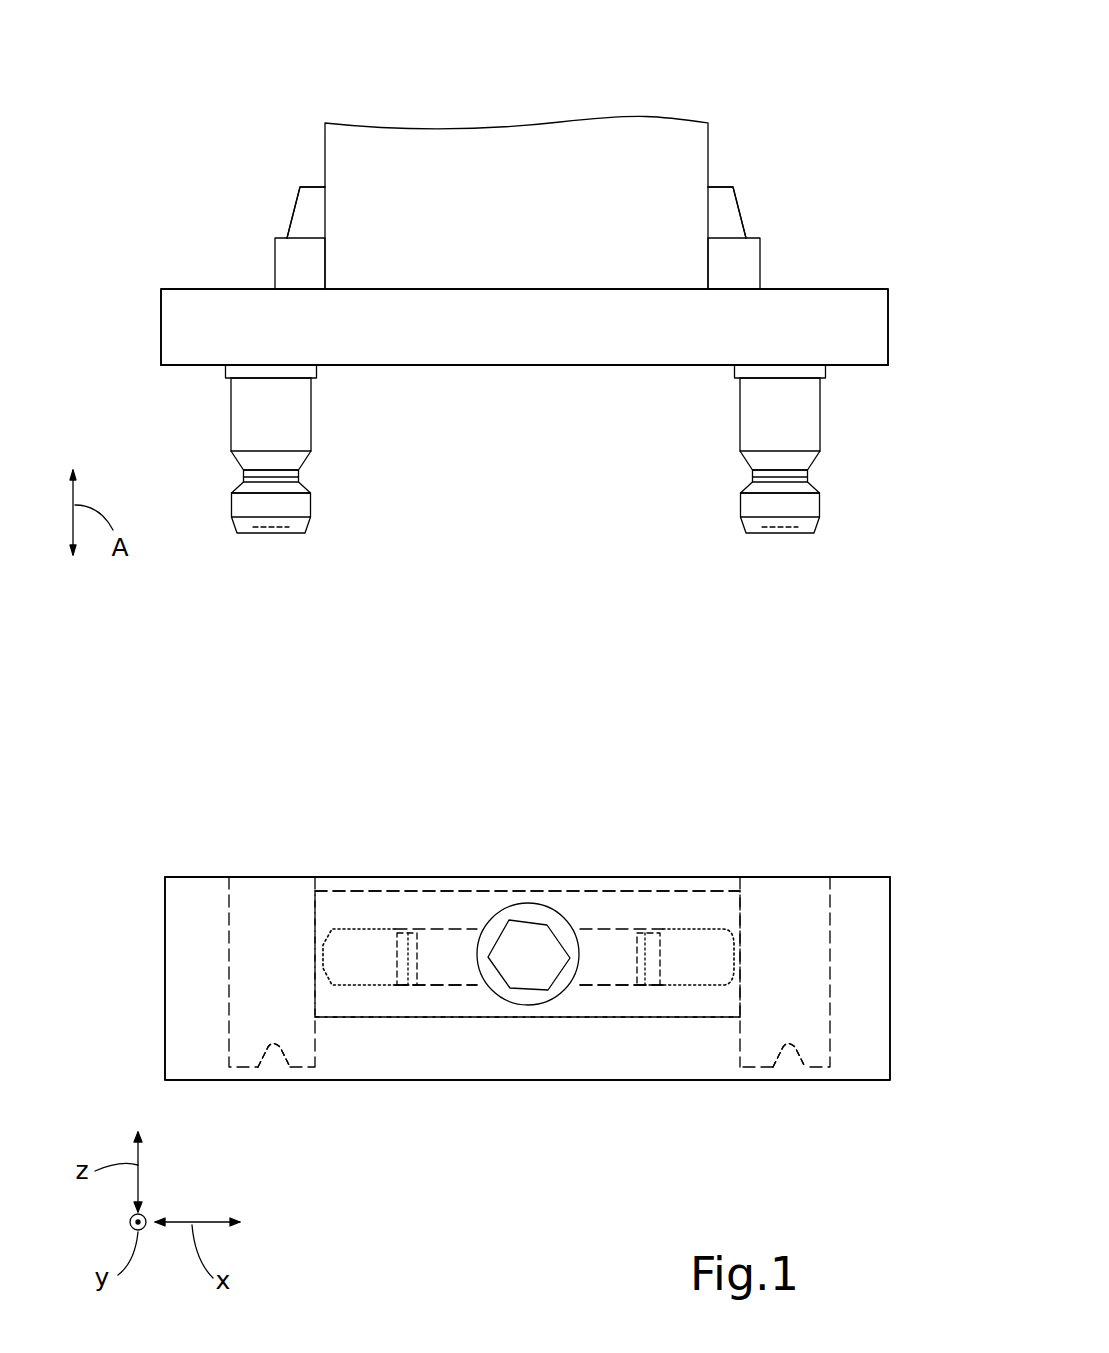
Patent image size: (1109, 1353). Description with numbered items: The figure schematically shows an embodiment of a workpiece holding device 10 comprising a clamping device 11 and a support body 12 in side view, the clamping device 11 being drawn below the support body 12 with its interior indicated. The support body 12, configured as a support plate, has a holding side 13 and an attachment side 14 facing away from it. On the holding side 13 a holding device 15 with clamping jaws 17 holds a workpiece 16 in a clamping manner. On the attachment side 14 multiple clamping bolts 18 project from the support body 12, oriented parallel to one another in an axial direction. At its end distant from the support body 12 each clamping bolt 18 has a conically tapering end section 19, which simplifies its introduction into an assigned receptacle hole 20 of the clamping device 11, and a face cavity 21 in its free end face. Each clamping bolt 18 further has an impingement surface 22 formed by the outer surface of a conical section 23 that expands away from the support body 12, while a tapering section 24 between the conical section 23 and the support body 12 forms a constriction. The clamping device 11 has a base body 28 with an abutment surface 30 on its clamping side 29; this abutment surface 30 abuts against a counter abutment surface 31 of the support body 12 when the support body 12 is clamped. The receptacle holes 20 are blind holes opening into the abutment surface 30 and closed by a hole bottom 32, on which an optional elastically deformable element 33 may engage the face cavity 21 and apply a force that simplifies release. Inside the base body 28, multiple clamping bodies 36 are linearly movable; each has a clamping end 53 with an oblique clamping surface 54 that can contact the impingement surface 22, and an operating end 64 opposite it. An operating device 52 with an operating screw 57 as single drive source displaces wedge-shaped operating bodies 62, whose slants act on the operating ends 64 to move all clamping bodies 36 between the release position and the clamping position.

The workpiece holding device 10 is at (743, 108).
The clamping device 11 is at (890, 808).
The support body 12 is at (876, 330).
The holding side 13 is at (855, 258).
The attachment side 14 is at (863, 370).
The holding device 15 is at (252, 226).
The workpiece 16 is at (512, 150).
The clamping jaws 17 is at (293, 212).
The clamping bolts 18 is at (193, 457).
The end section 19 is at (313, 526).
The receptacle hole 20 is at (230, 928).
The face cavity 21 is at (272, 533).
The impingement surface 22 is at (310, 479).
The conical section 23 is at (238, 483).
The tapering section 24 is at (273, 460).
The base body 28 is at (890, 968).
The clamping side 29 is at (188, 843).
The abutment surface 30 is at (420, 877).
The counter abutment surface 31 is at (528, 370).
The hole bottom 32 is at (273, 1070).
The elastically deformable element 33 is at (271, 1052).
The clamping bodies 36 is at (380, 988).
The operating device 52 is at (575, 899).
The clamping end 53 is at (333, 914).
The clamping surface 54 is at (327, 987).
The operating screw 57 is at (530, 1000).
The operating body 62 is at (462, 988).
The operating end 64 is at (408, 950).